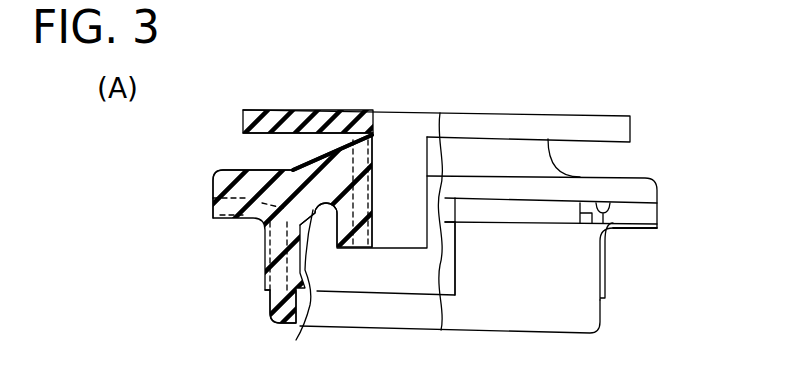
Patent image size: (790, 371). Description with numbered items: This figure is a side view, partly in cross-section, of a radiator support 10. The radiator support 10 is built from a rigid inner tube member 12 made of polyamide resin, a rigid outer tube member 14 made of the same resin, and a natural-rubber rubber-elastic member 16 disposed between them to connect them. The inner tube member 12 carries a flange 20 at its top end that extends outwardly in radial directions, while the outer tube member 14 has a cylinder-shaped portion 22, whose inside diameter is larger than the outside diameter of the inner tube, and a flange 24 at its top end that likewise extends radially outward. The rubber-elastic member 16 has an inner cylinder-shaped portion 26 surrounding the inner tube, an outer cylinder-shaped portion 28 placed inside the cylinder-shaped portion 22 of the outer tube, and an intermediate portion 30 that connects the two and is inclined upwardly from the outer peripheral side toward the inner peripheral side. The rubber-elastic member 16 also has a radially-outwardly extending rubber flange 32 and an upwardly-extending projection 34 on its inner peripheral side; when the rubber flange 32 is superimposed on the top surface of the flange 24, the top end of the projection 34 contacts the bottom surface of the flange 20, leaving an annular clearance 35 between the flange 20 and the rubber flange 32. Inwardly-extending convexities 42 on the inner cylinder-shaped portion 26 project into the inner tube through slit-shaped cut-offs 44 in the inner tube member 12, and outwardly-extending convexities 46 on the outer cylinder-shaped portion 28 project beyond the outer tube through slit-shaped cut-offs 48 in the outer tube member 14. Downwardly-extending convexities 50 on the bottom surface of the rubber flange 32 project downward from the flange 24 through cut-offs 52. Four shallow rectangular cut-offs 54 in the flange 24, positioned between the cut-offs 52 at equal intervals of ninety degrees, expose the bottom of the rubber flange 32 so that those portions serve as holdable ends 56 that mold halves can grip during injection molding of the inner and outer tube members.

The radiator support 10 is at (685, 118).
The rigid inner tube member 12 is at (278, 108).
The rigid outer tube member 14 is at (268, 305).
The rubber-elastic member 16 is at (214, 172).
The flange 20 is at (346, 110).
The cylinder-shaped portion 22 is at (583, 315).
The flange 24 is at (643, 213).
The inner cylinder-shaped portion 26 is at (338, 220).
The outer cylinder-shaped portion 28 is at (296, 340).
The intermediate portion 30 is at (305, 172).
The rubber flange 32 is at (640, 185).
The upwardly-extending projection 34 is at (334, 137).
The annular clearance 35 is at (285, 147).
The inwardly-extending convexities 42 is at (374, 150).
The slit-shaped cut-offs 44 is at (362, 197).
The outwardly-extending convexities 46 is at (603, 278).
The slit-shaped cut-offs 48 is at (265, 278).
The downwardly-extending convexities 50 is at (643, 233).
The cut-offs 52 is at (213, 198).
The cut-offs 54 is at (588, 225).
The holdable ends 56 is at (613, 207).